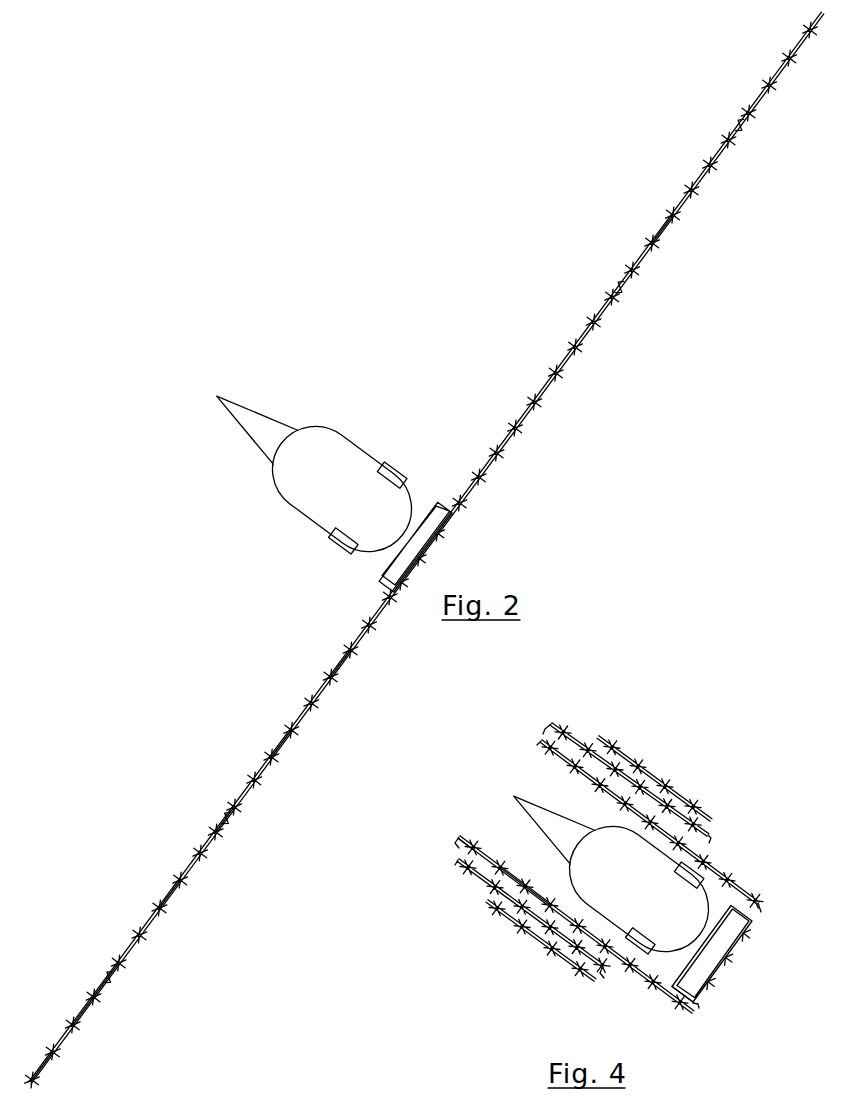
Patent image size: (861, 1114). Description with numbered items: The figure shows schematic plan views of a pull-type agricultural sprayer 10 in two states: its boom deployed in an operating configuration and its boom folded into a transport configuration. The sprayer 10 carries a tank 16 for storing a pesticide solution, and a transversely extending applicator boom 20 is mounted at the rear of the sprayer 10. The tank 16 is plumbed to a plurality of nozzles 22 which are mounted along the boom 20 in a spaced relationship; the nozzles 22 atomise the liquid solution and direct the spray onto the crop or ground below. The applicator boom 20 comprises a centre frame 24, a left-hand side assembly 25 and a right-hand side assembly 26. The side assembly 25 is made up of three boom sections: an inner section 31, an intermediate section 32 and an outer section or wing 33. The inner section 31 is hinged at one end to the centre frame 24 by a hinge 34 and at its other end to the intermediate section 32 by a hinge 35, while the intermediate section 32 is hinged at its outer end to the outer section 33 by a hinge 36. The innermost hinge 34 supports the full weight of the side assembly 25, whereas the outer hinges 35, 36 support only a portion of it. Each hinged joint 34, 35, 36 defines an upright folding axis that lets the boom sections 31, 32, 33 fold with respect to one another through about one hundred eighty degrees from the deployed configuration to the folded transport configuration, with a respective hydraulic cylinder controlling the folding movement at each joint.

In FIG. 2, the pull-type agricultural sprayer 10 is at (382, 388).
In FIG. 4, the pull-type agricultural sprayer 10 is at (752, 769).
In FIG. 2, the tank 16 is at (311, 440).
In FIG. 2, the applicator boom 20 is at (677, 176).
In FIG. 2, the nozzles 22 is at (47, 1085).
In FIG. 2, the centre frame 24 is at (438, 500).
In FIG. 4, the centre frame 24 is at (737, 940).
In FIG. 2, the left-hand side assembly 25 is at (288, 745).
In FIG. 2, the right-hand side assembly 26 is at (670, 230).
In FIG. 2, the inner section 31 is at (340, 662).
In FIG. 4, the inner section 31 is at (515, 875).
In FIG. 2, the intermediate section 32 is at (167, 892).
In FIG. 2, the outer section 33 is at (83, 1012).
In FIG. 4, the outer section 33 is at (538, 940).
In FIG. 4, the hinge 34 is at (703, 1010).
In FIG. 2, the hinge 35 is at (233, 820).
In FIG. 4, the hinge 35 is at (455, 843).
In FIG. 2, the hinge 36 is at (103, 973).
In FIG. 4, the hinge 36 is at (603, 983).